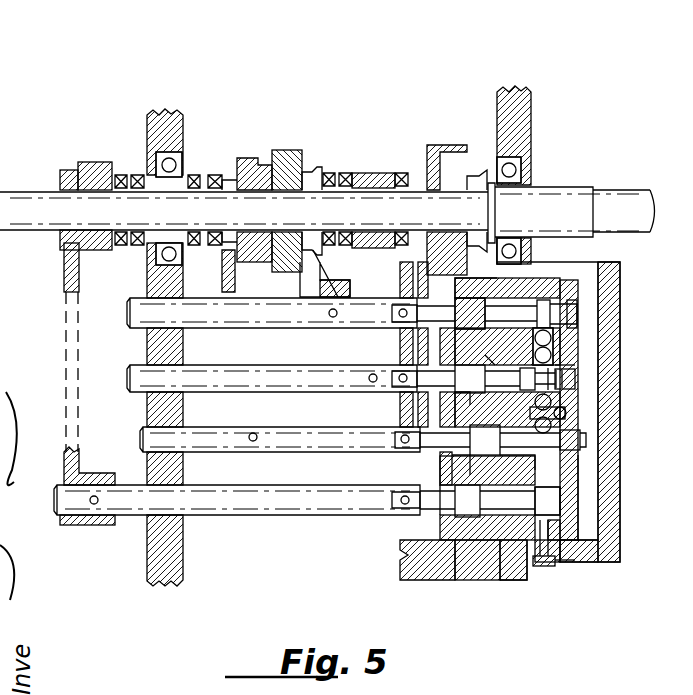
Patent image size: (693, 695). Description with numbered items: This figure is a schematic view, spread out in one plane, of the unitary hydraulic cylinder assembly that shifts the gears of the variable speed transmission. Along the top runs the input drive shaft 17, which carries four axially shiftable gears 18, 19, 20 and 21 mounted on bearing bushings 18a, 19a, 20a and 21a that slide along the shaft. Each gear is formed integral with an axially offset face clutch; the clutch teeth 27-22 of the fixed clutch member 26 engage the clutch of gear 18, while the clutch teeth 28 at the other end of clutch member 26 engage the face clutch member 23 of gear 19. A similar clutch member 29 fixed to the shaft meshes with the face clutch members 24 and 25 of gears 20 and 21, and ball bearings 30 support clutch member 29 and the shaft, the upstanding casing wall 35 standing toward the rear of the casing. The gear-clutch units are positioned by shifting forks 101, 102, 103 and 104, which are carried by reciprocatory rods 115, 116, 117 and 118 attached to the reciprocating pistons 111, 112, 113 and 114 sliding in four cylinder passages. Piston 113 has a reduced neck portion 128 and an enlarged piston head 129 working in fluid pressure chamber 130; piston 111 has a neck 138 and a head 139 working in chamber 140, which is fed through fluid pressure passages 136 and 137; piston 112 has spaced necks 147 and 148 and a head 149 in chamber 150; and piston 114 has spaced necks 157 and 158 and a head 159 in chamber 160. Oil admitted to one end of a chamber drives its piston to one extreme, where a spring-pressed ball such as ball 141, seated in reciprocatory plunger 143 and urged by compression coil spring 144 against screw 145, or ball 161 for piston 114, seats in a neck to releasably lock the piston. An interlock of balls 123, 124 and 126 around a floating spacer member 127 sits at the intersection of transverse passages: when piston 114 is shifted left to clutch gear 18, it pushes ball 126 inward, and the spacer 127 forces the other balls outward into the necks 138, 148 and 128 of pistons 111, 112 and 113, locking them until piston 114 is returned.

The input drive shaft 17 is at (553, 195).
The shiftable gear 18 is at (440, 147).
The bearing bushing 18a is at (470, 188).
The shiftable gear 19 is at (287, 150).
The bearing bushing 19a is at (312, 172).
The shiftable gear 20 is at (246, 158).
The bearing bushing 20a is at (256, 175).
The shiftable gear 21 is at (84, 162).
The bearing bushing 21a is at (60, 190).
The face clutch member 23 is at (328, 173).
The face clutch member 24 is at (213, 175).
The face clutch member 25 is at (120, 175).
The clutch member 26 is at (377, 166).
The clutch teeth and face clutch member 27-22 is at (397, 173).
The clutch teeth 28 is at (348, 173).
The clutch member 29 is at (190, 175).
The ball bearings 30 is at (150, 173).
The upstanding casing wall 35 is at (531, 122).
The shifting fork 101 is at (66, 277).
The shifting fork 102 is at (224, 287).
The shifting fork 103 is at (302, 280).
The shifting fork 104 is at (400, 272).
The reciprocating piston 111 is at (497, 570).
The reciprocating piston 112 is at (590, 478).
The reciprocating piston 113 is at (543, 293).
The reciprocating piston 114 is at (552, 344).
The reciprocatory rod 115 is at (260, 513).
The reciprocatory rod 116 is at (312, 452).
The reciprocatory rod 117 is at (280, 323).
The reciprocatory rod 118 is at (299, 386).
The ball 123 is at (560, 492).
The ball 124 is at (556, 424).
The ball 126 is at (570, 393).
The floating spacer member 127 is at (562, 413).
The reduced neck portion 128 is at (577, 312).
The enlarged piston head 129 is at (470, 315).
The fluid pressure chamber 130 is at (500, 306).
The fluid pressure passage 136 is at (460, 560).
The fluid pressure passage 137 is at (497, 580).
The reduced neck portion 138 is at (538, 566).
The enlarged piston head 139 is at (440, 526).
The fluid pressure chamber 140 is at (483, 565).
The spring-pressed ball 141 is at (562, 546).
The reciprocatory plunger 143 is at (560, 560).
The compression coil spring 144 is at (548, 567).
The screw 145 is at (558, 568).
The reduced neck portion 147 is at (586, 441).
The reduced neck portion 148 is at (560, 452).
The enlarged piston head 149 is at (447, 478).
The fluid pressure chamber 150 is at (445, 462).
The reduced neck portion 157 is at (575, 379).
The reduced neck portion 158 is at (555, 358).
The enlarged piston head 159 is at (460, 405).
The fluid pressure chamber 160 is at (495, 362).
The spring-pressed ball 161 is at (580, 365).